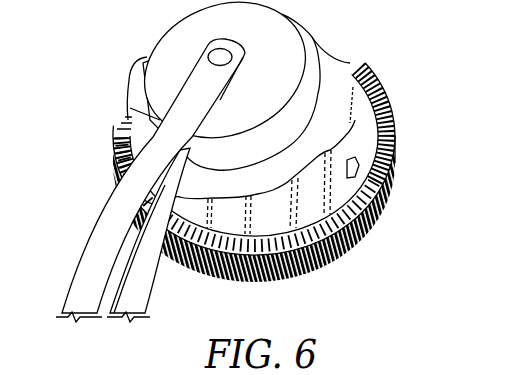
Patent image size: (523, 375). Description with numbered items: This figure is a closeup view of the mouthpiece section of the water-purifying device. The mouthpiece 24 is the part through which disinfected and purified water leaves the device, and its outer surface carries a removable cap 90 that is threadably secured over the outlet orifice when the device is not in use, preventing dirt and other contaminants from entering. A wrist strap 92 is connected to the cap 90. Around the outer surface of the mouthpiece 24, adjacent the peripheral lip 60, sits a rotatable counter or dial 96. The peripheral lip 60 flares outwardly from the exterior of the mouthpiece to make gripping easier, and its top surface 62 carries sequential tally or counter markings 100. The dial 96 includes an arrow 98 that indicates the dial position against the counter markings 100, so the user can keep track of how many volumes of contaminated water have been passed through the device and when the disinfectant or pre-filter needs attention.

The mouthpiece 24 is at (86, 76).
The cap 90 is at (307, 77).
The rotatable counter or dial 96 is at (333, 110).
The top surface of lip 62 is at (370, 143).
The counter markings 100 is at (372, 180).
The peripheral lip 60 is at (372, 219).
The arrow 98 is at (356, 246).
The wrist strap 92 is at (103, 237).